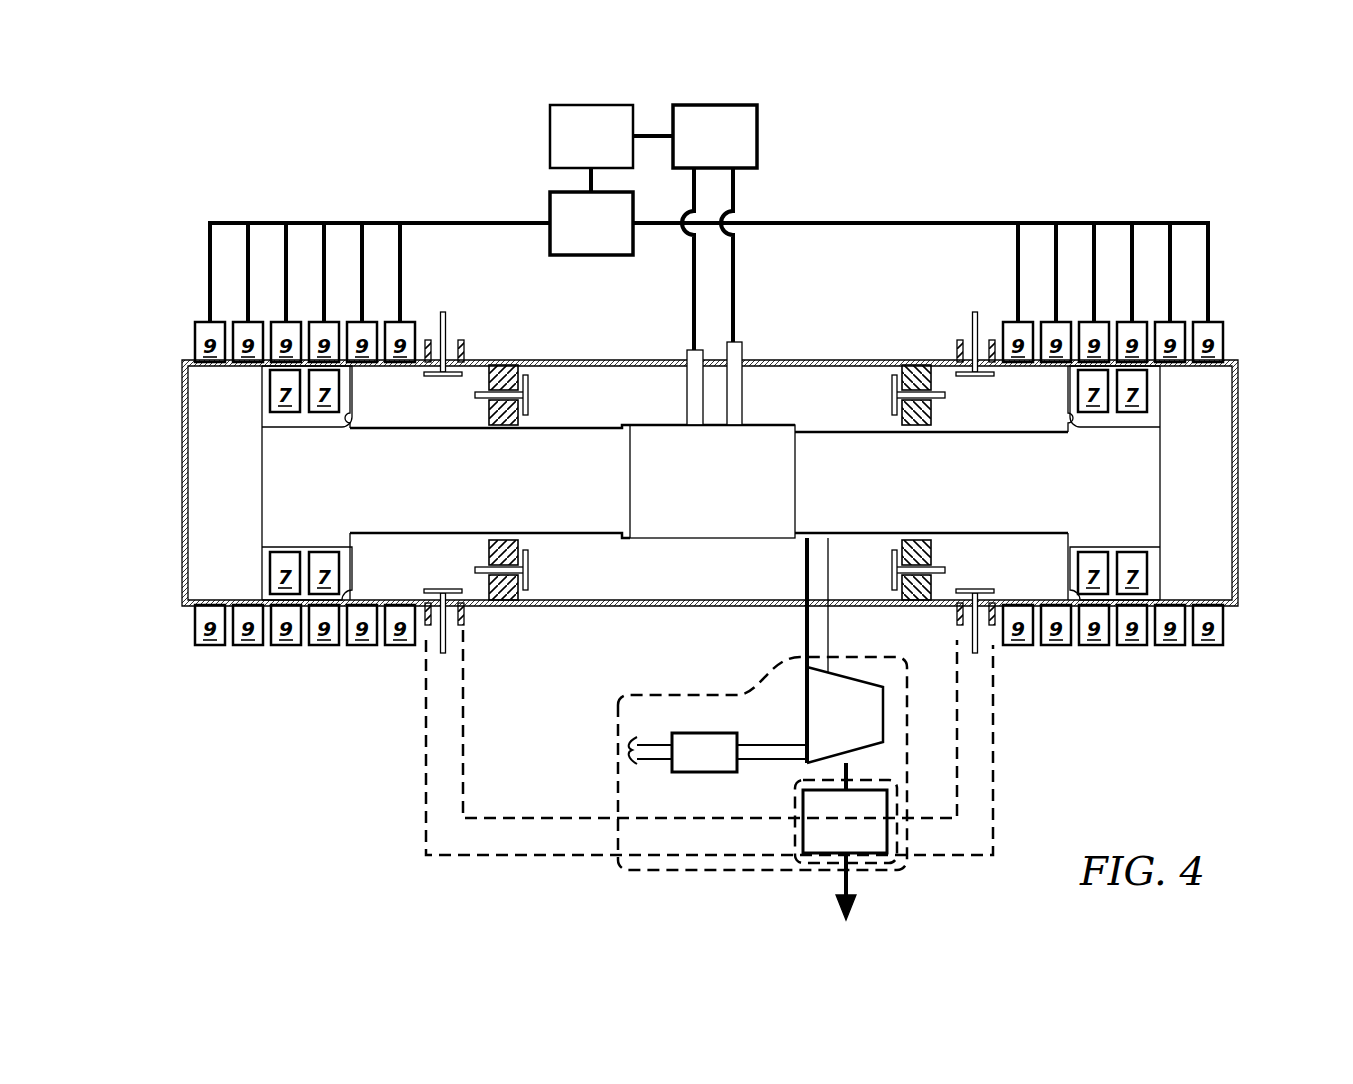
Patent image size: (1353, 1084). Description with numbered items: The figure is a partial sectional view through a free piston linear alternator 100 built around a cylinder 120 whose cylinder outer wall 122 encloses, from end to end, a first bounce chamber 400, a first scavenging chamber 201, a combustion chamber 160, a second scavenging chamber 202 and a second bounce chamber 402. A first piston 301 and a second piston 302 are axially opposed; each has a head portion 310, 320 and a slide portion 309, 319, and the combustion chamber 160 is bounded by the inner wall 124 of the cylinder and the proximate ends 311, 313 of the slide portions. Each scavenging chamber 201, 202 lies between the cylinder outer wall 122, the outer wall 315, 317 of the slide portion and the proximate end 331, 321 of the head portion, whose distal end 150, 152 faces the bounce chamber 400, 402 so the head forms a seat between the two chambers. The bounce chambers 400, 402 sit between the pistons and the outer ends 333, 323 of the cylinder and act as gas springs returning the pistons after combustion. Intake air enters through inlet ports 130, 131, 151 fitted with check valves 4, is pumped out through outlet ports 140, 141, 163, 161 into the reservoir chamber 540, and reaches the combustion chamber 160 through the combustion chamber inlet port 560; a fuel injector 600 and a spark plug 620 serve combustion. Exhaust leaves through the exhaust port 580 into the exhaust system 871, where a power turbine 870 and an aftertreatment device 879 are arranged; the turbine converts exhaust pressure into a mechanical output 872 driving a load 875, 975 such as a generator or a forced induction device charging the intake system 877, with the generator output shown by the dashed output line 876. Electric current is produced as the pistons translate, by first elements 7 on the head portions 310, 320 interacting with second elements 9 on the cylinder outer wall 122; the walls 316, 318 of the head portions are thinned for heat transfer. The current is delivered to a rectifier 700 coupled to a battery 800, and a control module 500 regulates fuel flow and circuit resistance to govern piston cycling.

The free piston linear alternator 100 is at (230, 170).
The battery 800 is at (573, 148).
The control module 500 is at (697, 148).
The rectifier 700 is at (573, 235).
The second element 9 is at (709, 434).
The first element 7 is at (708, 482).
The cylinder 120 is at (630, 362).
The cylinder outer wall 122 is at (850, 362).
The wall of head portion 316 is at (306, 362).
The wall of head portion 318 is at (1115, 362).
The outer wall of slide portion 315 is at (415, 428).
The outer wall of slide portion 317 is at (1012, 432).
The inlet port 130 is at (445, 335).
The distal end of head portion 150 is at (972, 345).
The inlet port 131 is at (442, 655).
The inlet port 151 is at (983, 620).
The check valve 4 is at (500, 372).
The spark plug 620 is at (690, 350).
The fuel injector 600 is at (745, 350).
The combustion chamber inlet port 560 is at (608, 428).
The reservoir chamber 540 is at (816, 412).
The inner wall of cylinder 124 is at (678, 430).
The combustion chamber 160 is at (712, 481).
The outlet port 140 is at (495, 400).
The outlet port 141 is at (495, 565).
The scavenging outlet port 163 is at (940, 400).
The outlet port 161 is at (927, 565).
The first scavenging chamber 201 is at (407, 408).
The second scavenging chamber 202 is at (1007, 410).
The proximate end of head portion 331 is at (350, 426).
The proximate end of head portion 321 is at (1068, 426).
The first bounce chamber 400 is at (244, 502).
The second bounce chamber 402 is at (1219, 502).
The first piston 301 is at (389, 502).
The second piston 302 is at (1059, 502).
The distal end of head portion 152 is at (1162, 445).
The outer end of cylinder 333 is at (182, 498).
The outer end of cylinder 323 is at (1238, 498).
The head portion 310 is at (270, 520).
The head portion 320 is at (1150, 520).
The exhaust port 580 is at (818, 542).
The slide portion 309 is at (553, 483).
The proximate end of slide portion 311 is at (633, 520).
The proximate end of slide portion 313 is at (788, 510).
The slide portion 319 is at (968, 497).
The exhaust system 871 is at (618, 745).
The aftertreatment device 879 is at (724, 765).
The power turbine 870 is at (861, 727).
The mechanical output 872 is at (848, 773).
The intake system 877 is at (993, 797).
The load 875 is at (865, 835).
The load 975 is at (900, 838).
The output line 876 is at (850, 883).